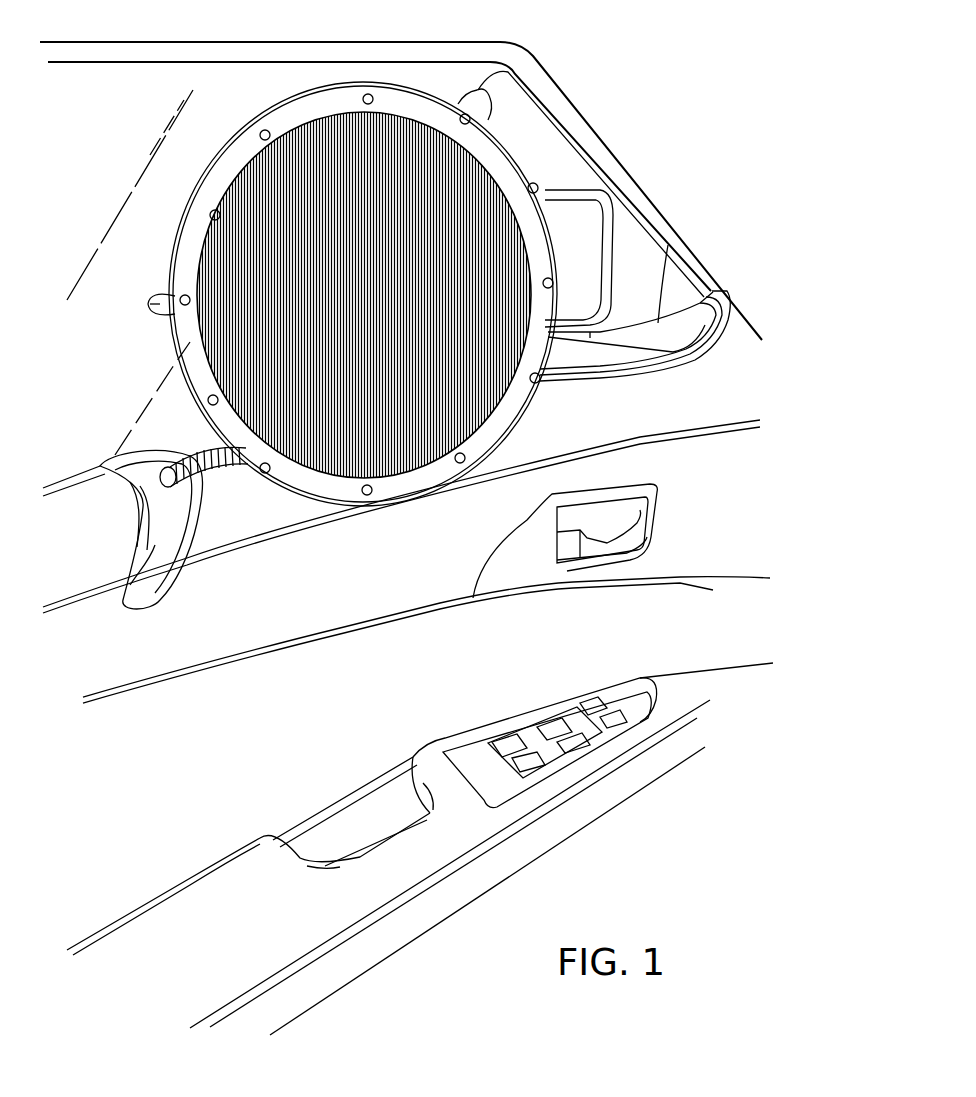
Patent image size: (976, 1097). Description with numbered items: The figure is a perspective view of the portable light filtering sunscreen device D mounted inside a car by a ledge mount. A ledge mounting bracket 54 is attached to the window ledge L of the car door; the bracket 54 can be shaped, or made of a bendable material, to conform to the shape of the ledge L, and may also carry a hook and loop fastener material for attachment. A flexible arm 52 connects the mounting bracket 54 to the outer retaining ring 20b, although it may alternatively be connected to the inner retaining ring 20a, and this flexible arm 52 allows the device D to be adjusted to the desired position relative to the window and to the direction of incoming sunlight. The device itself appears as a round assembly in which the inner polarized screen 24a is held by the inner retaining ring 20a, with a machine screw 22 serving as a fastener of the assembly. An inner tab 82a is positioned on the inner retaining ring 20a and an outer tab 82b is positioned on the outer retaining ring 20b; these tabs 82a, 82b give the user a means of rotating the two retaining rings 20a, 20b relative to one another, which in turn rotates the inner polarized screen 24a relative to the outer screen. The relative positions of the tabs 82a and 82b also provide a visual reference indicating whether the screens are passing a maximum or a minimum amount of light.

The inner retaining ring 20a is at (508, 156).
The outer retaining ring 20b is at (262, 125).
The machine screw 22 is at (364, 280).
The inner polarized screen 24a is at (324, 435).
The inner tab 82a is at (500, 52).
The outer tab 82b is at (140, 307).
The flexible arm 52 is at (217, 480).
The ledge mounting bracket 54 is at (152, 575).
The sunscreen device D is at (143, 152).
The door ledge L is at (93, 520).